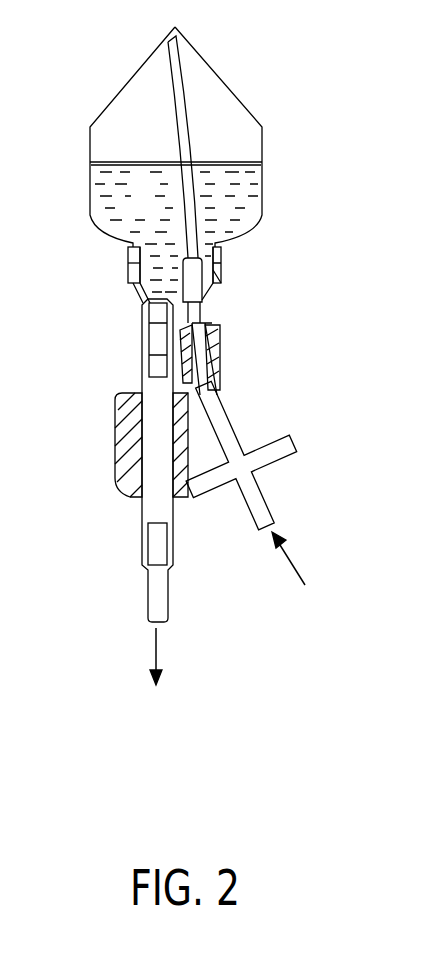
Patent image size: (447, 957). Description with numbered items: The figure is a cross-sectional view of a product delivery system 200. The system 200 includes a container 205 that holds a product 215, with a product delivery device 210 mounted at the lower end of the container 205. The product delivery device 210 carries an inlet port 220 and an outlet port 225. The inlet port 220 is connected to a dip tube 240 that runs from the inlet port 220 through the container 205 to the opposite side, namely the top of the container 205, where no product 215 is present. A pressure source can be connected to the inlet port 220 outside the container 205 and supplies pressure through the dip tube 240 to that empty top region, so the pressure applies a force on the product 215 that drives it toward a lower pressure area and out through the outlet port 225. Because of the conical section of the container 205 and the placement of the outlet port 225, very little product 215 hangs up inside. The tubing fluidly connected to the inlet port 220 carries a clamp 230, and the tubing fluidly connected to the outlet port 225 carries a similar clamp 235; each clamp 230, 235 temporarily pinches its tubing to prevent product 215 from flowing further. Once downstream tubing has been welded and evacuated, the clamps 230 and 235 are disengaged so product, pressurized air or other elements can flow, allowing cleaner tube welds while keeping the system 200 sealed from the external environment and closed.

The product delivery system 200 is at (293, 702).
The container 205 is at (125, 85).
The product delivery device 210 is at (127, 262).
The product 215 is at (160, 208).
The inlet port 220 is at (217, 285).
The outlet port 225 is at (145, 317).
The clamp 230 is at (222, 345).
The clamp 235 is at (115, 425).
The dip tube 240 is at (187, 88).